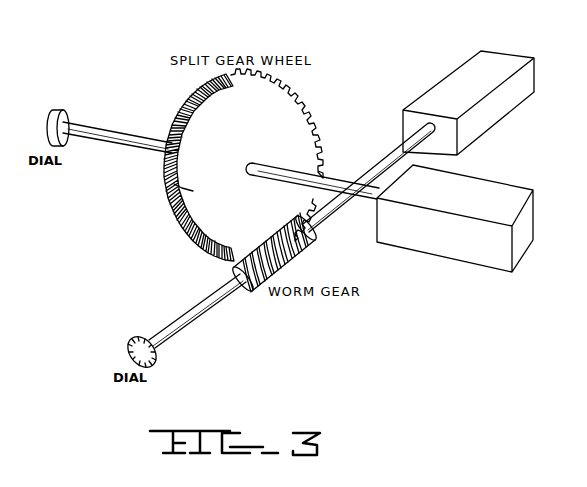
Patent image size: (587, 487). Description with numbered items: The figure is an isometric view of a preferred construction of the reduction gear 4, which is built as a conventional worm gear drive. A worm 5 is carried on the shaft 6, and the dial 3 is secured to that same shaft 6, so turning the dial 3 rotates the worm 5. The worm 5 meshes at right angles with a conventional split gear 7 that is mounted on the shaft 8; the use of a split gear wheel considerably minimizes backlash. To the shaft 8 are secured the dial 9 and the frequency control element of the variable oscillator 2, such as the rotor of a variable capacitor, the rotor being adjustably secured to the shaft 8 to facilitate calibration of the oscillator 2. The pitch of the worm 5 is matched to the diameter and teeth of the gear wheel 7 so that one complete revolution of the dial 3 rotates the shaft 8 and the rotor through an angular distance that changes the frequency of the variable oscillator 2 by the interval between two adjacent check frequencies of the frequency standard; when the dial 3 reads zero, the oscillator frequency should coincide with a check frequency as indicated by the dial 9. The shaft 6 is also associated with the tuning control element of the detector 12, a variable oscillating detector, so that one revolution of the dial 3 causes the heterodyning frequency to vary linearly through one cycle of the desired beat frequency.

The variable oscillator 2 is at (499, 191).
The dial 3 is at (141, 334).
The reduction gear 4 is at (323, 116).
The worm 5 is at (306, 249).
The shaft 6 is at (371, 171).
The split gear 7 is at (170, 193).
The shaft 8 is at (106, 136).
The dial 9 is at (68, 118).
The detector 12 is at (493, 58).